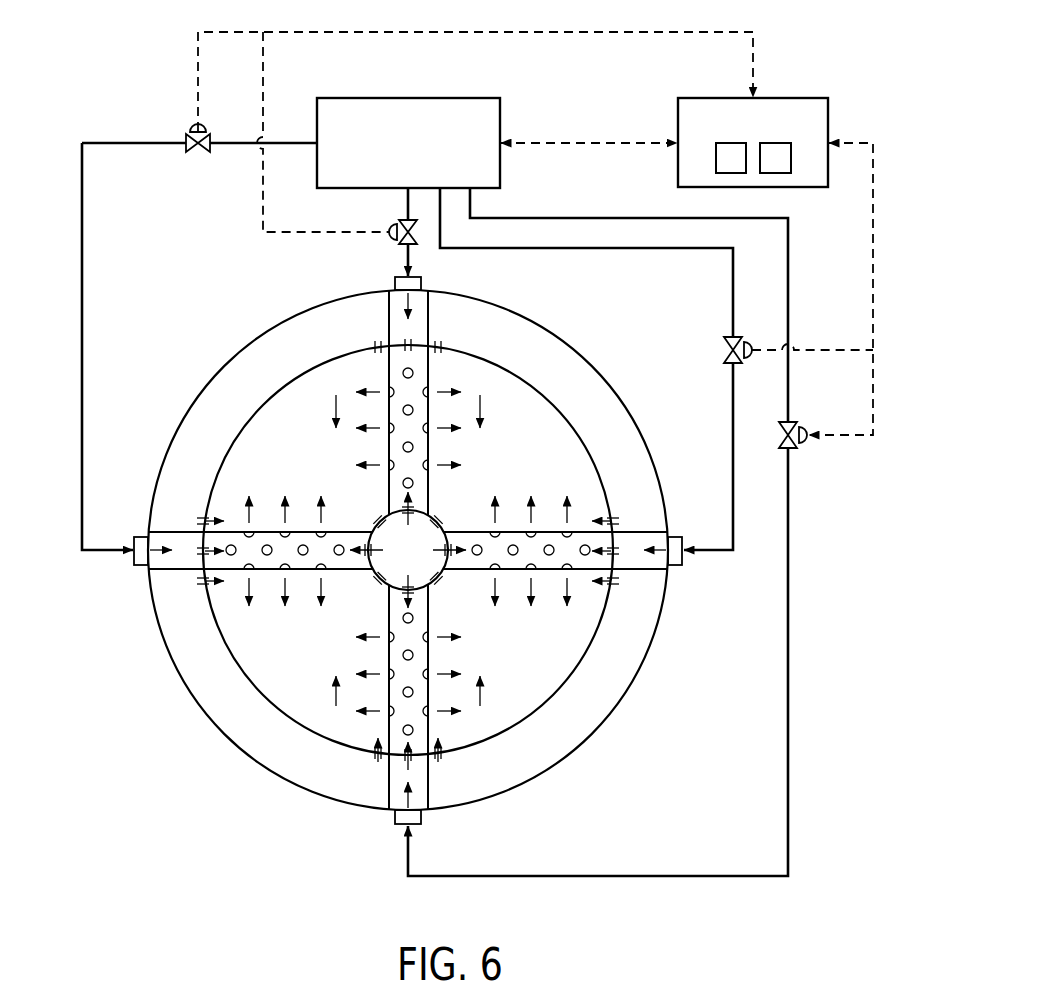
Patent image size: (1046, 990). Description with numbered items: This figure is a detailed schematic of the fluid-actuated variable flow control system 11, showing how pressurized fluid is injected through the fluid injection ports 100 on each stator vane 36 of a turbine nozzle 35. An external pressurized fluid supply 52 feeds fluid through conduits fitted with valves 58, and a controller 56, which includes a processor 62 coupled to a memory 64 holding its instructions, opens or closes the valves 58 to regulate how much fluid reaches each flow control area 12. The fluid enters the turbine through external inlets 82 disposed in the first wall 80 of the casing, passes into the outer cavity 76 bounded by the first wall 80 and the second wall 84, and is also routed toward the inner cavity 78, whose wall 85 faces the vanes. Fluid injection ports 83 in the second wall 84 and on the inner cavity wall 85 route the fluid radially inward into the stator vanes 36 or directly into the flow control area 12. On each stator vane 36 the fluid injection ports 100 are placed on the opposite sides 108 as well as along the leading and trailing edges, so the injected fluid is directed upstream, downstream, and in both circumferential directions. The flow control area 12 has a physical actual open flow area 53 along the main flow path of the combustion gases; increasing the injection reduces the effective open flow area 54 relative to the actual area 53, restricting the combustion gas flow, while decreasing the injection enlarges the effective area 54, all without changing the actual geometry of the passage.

The fluid-actuated variable flow control system 11 is at (812, 40).
The fluid-actuated variable flow control area 12 is at (259, 663).
The turbine nozzle 35 is at (247, 697).
The stator vane 36 is at (405, 402).
The external pressurized fluid supply 52 is at (405, 98).
The actual open flow area 53 is at (294, 414).
The effective open flow area 54 is at (252, 451).
The controller 56 is at (728, 98).
The valve 58 is at (196, 128).
The processor 62 is at (716, 154).
The memory 64 is at (775, 173).
The outer cavity 76 is at (567, 721).
The inner cavity 78 is at (395, 564).
The first wall 80 is at (636, 683).
The external inlet 82 is at (398, 280).
The fluid injection port 83 is at (441, 347).
The second wall 84 is at (598, 635).
The inner cavity wall 85 is at (441, 527).
The fluid injection port 100 is at (410, 407).
The opposite sides 108 is at (388, 655).